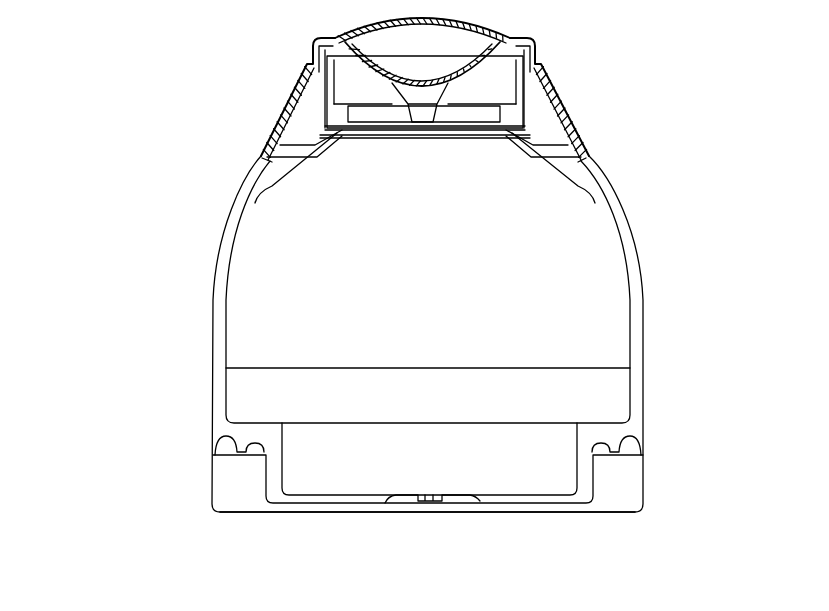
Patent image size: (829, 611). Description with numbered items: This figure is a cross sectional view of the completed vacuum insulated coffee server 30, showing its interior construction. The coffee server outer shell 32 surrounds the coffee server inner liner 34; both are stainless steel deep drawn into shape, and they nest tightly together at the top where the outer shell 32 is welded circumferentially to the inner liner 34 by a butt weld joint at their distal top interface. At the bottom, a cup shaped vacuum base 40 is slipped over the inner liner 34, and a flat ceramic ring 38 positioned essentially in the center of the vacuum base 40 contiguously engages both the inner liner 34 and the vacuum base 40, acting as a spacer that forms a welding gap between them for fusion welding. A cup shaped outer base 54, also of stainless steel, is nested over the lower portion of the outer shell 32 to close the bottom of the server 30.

The coffee server 30 is at (220, 190).
The outer shell 32 is at (608, 187).
The inner liner 34 is at (223, 300).
The ceramic ring 38 is at (390, 497).
The vacuum base 40 is at (265, 470).
The outer base 54 is at (615, 512).